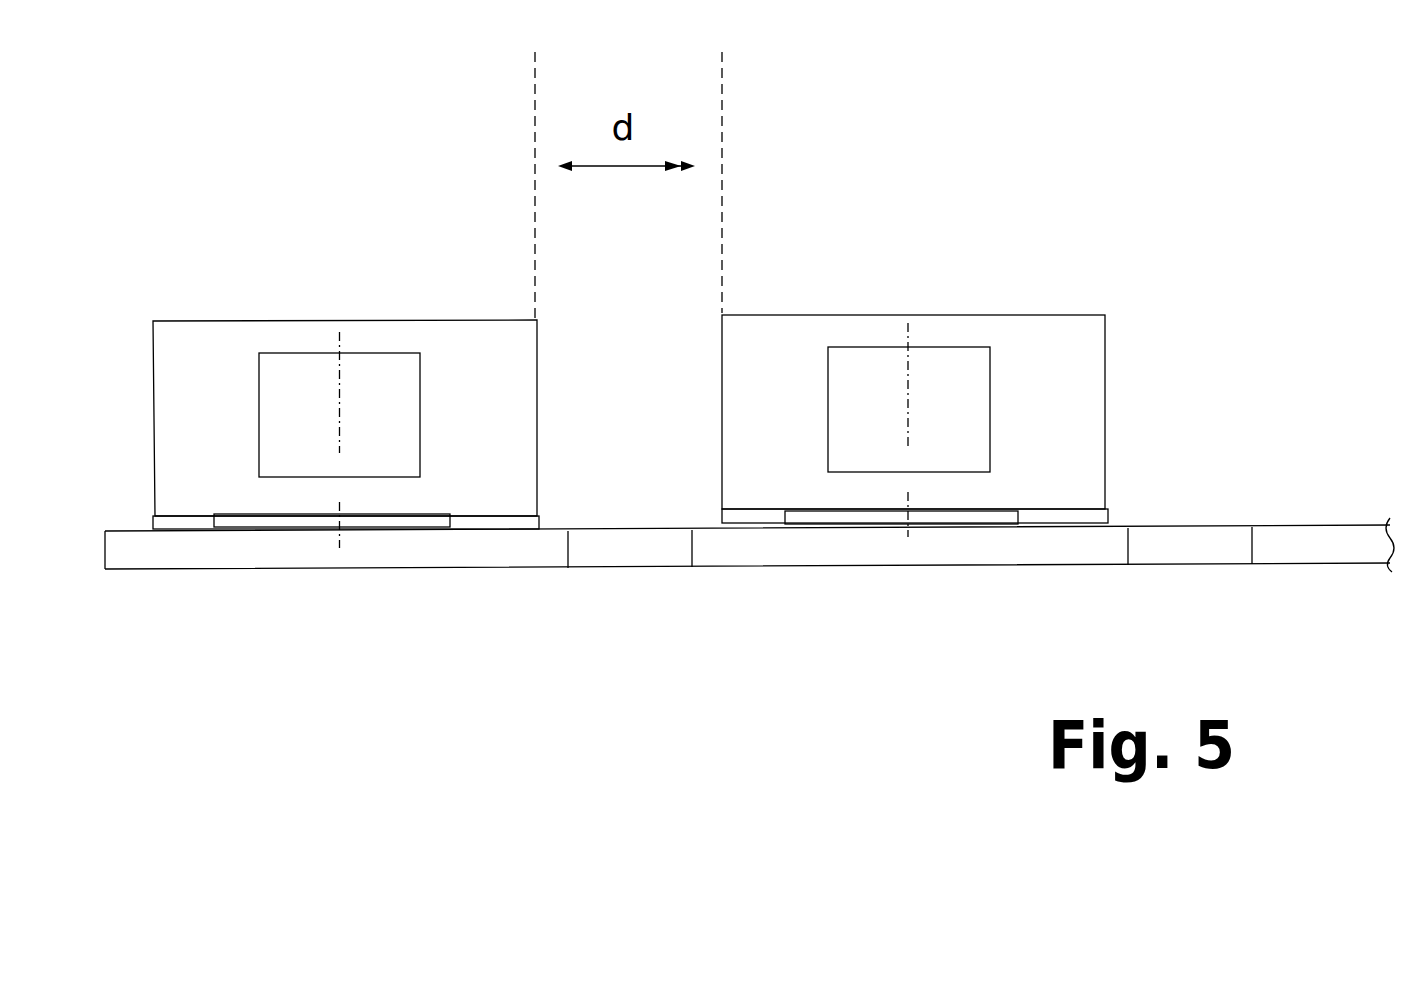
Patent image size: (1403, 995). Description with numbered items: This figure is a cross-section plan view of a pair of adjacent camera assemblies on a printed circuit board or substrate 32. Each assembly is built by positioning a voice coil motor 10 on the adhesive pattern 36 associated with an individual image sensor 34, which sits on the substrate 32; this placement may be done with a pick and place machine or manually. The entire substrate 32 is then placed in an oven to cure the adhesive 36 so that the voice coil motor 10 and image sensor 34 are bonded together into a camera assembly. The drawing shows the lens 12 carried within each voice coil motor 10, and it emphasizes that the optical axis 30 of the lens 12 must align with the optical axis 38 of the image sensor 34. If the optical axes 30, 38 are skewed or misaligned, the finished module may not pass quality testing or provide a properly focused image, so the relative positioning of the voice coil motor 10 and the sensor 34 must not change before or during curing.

The voice coil motor 10 is at (186, 351).
The lens 12 is at (392, 425).
The optical axis of the lens 30 is at (340, 385).
The substrate 32 is at (166, 555).
The image sensor 34 is at (390, 523).
The adhesive pattern 36 is at (523, 517).
The optical axis of the image sensor 38 is at (341, 525).